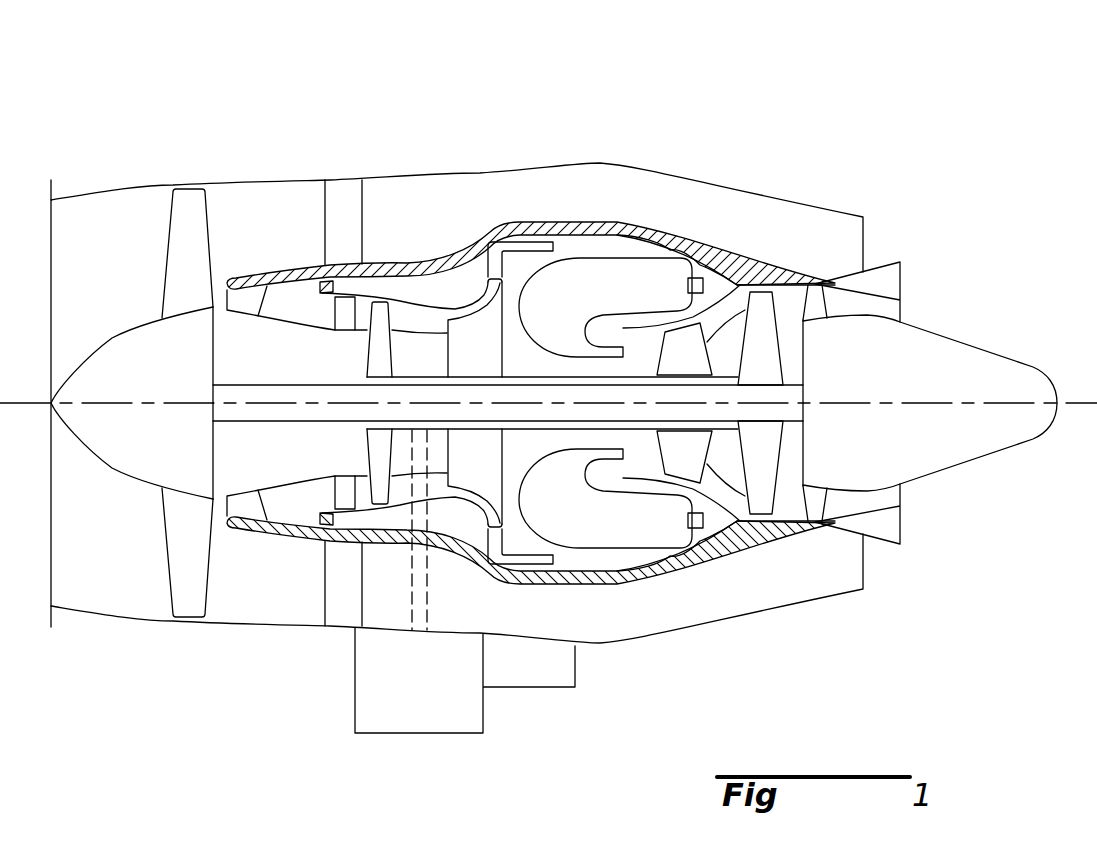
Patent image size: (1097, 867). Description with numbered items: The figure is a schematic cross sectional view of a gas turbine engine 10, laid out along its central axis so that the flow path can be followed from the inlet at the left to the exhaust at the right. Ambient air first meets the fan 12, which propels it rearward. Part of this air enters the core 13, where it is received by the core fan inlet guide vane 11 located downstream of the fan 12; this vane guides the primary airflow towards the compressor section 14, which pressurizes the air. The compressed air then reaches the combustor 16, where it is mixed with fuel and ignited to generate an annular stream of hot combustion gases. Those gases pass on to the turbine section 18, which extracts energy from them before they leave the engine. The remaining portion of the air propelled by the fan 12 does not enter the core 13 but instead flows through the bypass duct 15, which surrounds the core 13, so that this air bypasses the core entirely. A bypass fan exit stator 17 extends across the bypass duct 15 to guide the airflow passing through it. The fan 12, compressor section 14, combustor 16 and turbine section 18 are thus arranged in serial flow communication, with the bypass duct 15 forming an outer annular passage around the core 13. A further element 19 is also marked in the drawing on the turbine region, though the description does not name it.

The gas turbine engine 10 is at (548, 367).
The core fan inlet guide vane 11 is at (245, 303).
The fan 12 is at (185, 540).
The core 13 is at (752, 247).
The compressor section 14 is at (408, 313).
The bypass duct 15 is at (478, 205).
The combustor 16 is at (605, 275).
The bypass fan exit stator 17 is at (337, 197).
The turbine section 18 is at (723, 462).
The low pressure turbine 19 is at (763, 483).